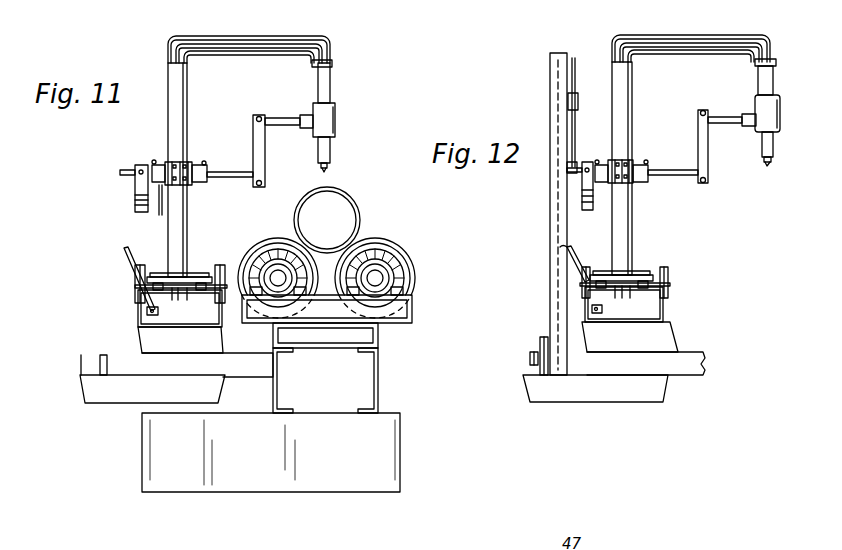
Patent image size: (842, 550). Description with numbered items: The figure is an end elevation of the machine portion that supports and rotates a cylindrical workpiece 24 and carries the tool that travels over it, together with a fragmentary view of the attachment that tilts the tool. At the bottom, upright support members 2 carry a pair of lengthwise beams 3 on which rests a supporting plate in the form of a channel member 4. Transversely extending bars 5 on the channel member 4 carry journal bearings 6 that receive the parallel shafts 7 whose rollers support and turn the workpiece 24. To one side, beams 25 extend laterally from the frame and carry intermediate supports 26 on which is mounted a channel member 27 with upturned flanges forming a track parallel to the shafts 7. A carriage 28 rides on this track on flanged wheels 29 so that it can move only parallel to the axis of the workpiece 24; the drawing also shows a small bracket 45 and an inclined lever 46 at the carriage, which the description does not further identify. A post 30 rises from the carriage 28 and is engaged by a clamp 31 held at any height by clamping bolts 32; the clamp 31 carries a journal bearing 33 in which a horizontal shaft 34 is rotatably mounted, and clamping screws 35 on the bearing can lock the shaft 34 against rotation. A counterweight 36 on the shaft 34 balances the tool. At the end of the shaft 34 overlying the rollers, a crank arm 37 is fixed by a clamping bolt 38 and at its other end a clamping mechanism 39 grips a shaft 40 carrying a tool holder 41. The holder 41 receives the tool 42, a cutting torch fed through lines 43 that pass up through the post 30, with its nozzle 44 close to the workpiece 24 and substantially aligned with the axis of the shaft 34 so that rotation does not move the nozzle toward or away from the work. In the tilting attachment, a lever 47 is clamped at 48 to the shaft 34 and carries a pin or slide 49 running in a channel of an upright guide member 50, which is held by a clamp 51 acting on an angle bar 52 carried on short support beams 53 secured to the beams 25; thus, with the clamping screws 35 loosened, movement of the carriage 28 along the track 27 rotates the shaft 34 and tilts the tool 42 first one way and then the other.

In FIG. 11, the upright support members 2 is at (400, 458).
In FIG. 11, the beams 3 is at (277, 383).
In FIG. 11, the channel member 4 is at (380, 343).
In FIG. 11, the transversely extending bars 5 is at (412, 313).
In FIG. 11, the journal bearings 6 is at (290, 283).
In FIG. 11, the parallel shafts 7 is at (262, 262).
In FIG. 11, the workpiece 24 is at (347, 205).
In FIG. 11, the beams 25 is at (237, 374).
In FIG. 12, the beams 25 is at (703, 376).
In FIG. 11, the intermediate supports 26 is at (145, 338).
In FIG. 12, the intermediate supports 26 is at (665, 340).
In FIG. 11, the channel member (track) 27 is at (138, 302).
In FIG. 12, the channel member (track) 27 is at (665, 300).
In FIG. 11, the carriage 28 is at (150, 277).
In FIG. 12, the carriage 28 is at (652, 276).
In FIG. 11, the flanged wheels 29 is at (137, 275).
In FIG. 12, the flanged wheels 29 is at (668, 271).
In FIG. 11, the post 30 is at (187, 220).
In FIG. 12, the post 30 is at (632, 215).
In FIG. 12, the clamp 31 is at (636, 165).
In FIG. 11, the clamping bolts 32 is at (165, 165).
In FIG. 12, the clamping bolts 32 is at (633, 185).
In FIG. 11, the journal bearing 33 is at (159, 192).
In FIG. 12, the journal bearing 33 is at (646, 165).
In FIG. 11, the shaft 34 is at (219, 172).
In FIG. 12, the shaft 34 is at (700, 172).
In FIG. 11, the clamping screws 35 is at (153, 162).
In FIG. 12, the clamping screws 35 is at (597, 160).
In FIG. 11, the counterweight 36 is at (135, 190).
In FIG. 12, the counterweight 36 is at (582, 195).
In FIG. 11, the crank arm 37 is at (266, 152).
In FIG. 12, the crank arm 37 is at (709, 141).
In FIG. 11, the clamping bolt 38 is at (259, 186).
In FIG. 12, the clamping bolt 38 is at (705, 184).
In FIG. 11, the clamping mechanism 39 is at (258, 116).
In FIG. 12, the clamping mechanism 39 is at (704, 111).
In FIG. 11, the shaft 40 is at (269, 118).
In FIG. 12, the shaft 40 is at (732, 120).
In FIG. 11, the tool holder 41 is at (334, 114).
In FIG. 12, the tool holder 41 is at (781, 118).
In FIG. 11, the tool 42 is at (330, 150).
In FIG. 12, the tool 42 is at (774, 85).
In FIG. 11, the lines 43 is at (271, 37).
In FIG. 12, the lines 43 is at (703, 36).
In FIG. 11, the nozzle 44 is at (326, 167).
In FIG. 12, the nozzle 44 is at (772, 165).
In FIG. 11, the pivot bracket 45 is at (147, 311).
In FIG. 12, the pivot bracket 45 is at (603, 310).
In FIG. 11, the lever 46 is at (125, 249).
In FIG. 12, the lever 46 is at (578, 260).
In FIG. 12, the lever 47 is at (576, 63).
In FIG. 12, the clamp 48 is at (567, 172).
In FIG. 12, the pin or slide 49 is at (566, 97).
In FIG. 12, the upright guide member 50 is at (552, 234).
In FIG. 12, the clamp 51 is at (540, 350).
In FIG. 11, the angle bar 52 is at (85, 370).
In FIG. 12, the angle bar 52 is at (531, 363).
In FIG. 11, the short support beams 53 is at (130, 398).
In FIG. 12, the short support beams 53 is at (580, 398).